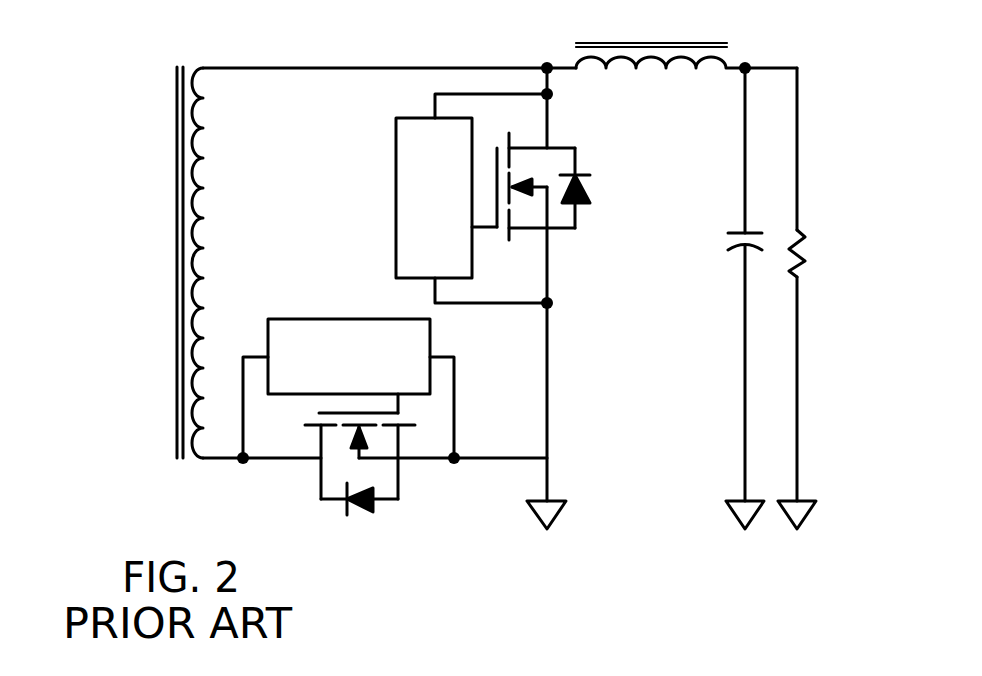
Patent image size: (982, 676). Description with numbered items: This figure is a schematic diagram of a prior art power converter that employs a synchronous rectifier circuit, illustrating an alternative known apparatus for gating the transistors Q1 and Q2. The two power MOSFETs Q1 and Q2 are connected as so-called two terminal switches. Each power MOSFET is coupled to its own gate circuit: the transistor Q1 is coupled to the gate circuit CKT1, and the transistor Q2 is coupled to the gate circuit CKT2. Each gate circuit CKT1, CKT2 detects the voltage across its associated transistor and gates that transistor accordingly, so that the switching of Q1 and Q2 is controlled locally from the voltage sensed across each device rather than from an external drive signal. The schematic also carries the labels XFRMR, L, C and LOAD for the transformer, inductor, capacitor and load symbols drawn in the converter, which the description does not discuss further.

The transformer XFRMR is at (126, 262).
The gate circuit CKT1 is at (388, 158).
The gate circuit CKT2 is at (305, 308).
The power MOSFET Q1 is at (563, 238).
The power MOSFET Q2 is at (412, 472).
The output inductor L is at (686, 82).
The output capacitor C is at (730, 298).
The load LOAD is at (844, 298).